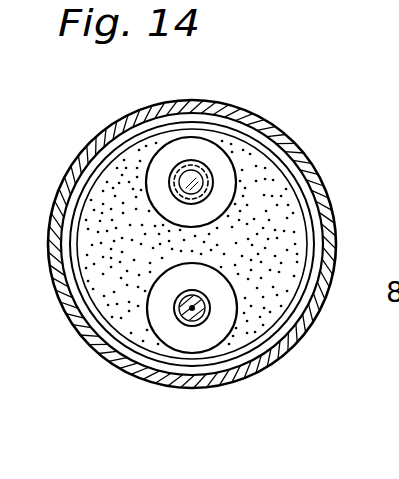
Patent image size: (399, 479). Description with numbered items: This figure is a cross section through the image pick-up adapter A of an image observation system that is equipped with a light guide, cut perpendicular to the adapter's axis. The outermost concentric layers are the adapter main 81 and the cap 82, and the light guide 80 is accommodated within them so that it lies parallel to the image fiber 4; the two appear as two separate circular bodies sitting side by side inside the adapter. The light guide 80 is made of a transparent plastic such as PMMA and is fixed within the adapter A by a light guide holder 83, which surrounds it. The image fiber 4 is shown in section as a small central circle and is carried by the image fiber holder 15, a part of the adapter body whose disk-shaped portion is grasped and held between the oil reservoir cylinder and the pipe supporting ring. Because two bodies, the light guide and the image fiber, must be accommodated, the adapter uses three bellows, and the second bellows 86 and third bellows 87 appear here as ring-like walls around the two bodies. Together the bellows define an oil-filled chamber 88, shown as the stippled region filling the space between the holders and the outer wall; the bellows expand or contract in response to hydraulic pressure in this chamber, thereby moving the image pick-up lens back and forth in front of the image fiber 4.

The image pick-up adapter A is at (243, 102).
The image fiber 4 is at (191, 322).
The image fiber holder 15 is at (211, 312).
The light guide 80 is at (213, 185).
The adapter main 81 is at (335, 278).
The cap 82 is at (313, 312).
The light guide holder 83 is at (207, 170).
The second bellows 86 is at (147, 170).
The third bellows 87 is at (115, 337).
The oil-filled chamber 88 is at (295, 243).